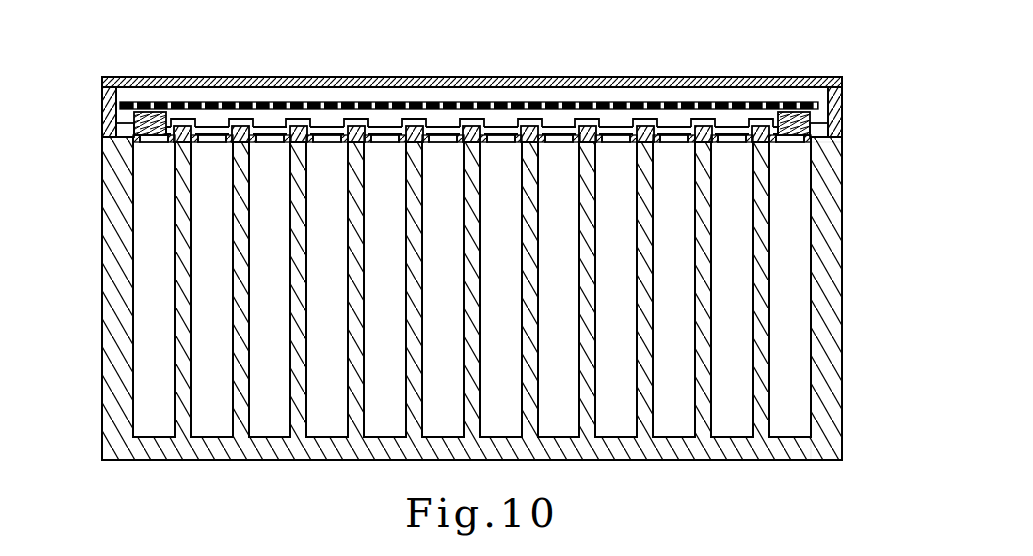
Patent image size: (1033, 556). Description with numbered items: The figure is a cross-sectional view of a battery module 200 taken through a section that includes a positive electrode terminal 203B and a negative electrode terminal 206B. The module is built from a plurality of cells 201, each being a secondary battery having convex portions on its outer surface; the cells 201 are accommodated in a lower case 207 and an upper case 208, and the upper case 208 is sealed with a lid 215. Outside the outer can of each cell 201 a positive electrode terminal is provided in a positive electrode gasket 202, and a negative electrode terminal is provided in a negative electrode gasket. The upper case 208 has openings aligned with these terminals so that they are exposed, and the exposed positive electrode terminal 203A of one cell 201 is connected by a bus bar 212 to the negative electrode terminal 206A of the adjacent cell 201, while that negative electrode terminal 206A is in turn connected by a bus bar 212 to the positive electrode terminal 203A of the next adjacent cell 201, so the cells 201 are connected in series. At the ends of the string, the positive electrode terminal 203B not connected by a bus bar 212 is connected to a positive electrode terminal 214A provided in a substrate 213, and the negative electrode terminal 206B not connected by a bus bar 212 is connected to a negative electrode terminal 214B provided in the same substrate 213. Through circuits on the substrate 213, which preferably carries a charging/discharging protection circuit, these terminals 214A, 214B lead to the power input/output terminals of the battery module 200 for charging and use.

The battery module 200 is at (92, 22).
The cell 201 is at (795, 285).
The positive electrode gasket 202 is at (842, 150).
The positive electrode terminal 203A is at (214, 134).
The positive electrode terminal 203B is at (842, 136).
The negative electrode terminal 206A is at (274, 132).
The negative electrode terminal 206B is at (102, 134).
The lower case 207 is at (833, 252).
The upper case 208 is at (842, 166).
The bus bar 212 is at (245, 116).
The substrate 213 is at (842, 100).
The positive electrode terminal 214A is at (842, 118).
The negative electrode terminal 214B is at (102, 121).
The lid 215 is at (842, 82).